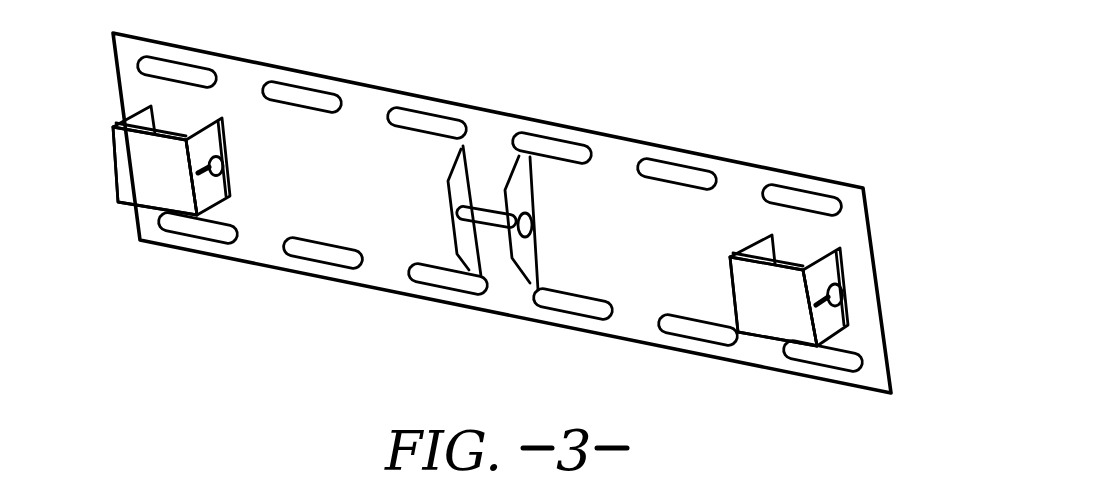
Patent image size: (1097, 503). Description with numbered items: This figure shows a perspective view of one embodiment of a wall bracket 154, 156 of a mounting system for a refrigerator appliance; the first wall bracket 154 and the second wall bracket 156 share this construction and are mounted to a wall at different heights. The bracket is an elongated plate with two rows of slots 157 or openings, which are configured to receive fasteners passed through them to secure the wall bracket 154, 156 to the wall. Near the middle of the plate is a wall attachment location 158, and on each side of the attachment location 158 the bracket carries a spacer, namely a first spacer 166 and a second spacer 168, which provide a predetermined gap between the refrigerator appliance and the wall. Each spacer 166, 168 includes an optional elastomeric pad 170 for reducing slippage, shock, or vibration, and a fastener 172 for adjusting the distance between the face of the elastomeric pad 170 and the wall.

The first wall bracket 154 is at (534, 213).
The second wall bracket 156 is at (882, 230).
The slots 157 is at (322, 102).
The wall attachment location 158 is at (537, 188).
The first spacer 166 is at (98, 153).
The second spacer 168 is at (852, 271).
The elastomeric pad 170 is at (780, 319).
The fastener 172 is at (902, 297).